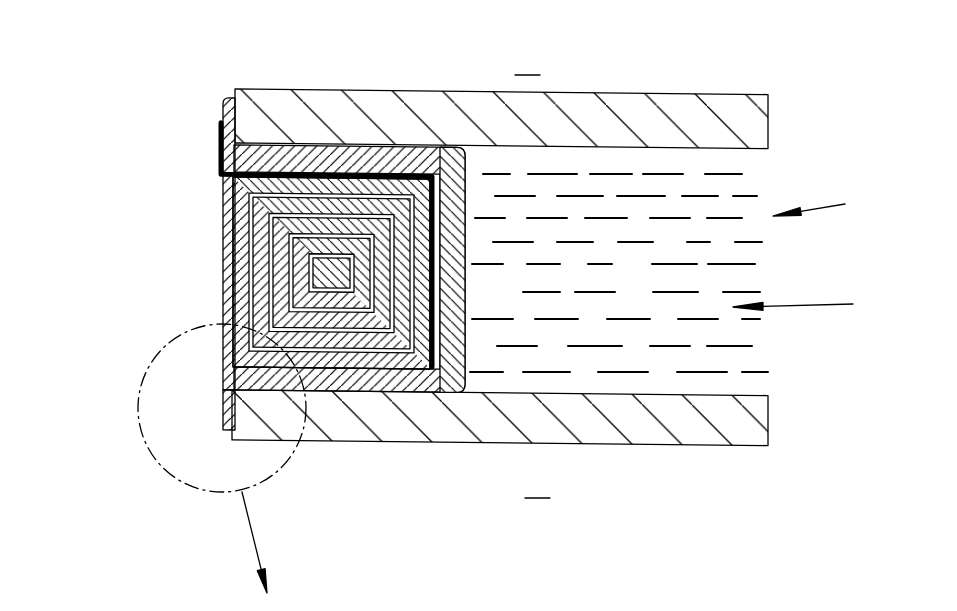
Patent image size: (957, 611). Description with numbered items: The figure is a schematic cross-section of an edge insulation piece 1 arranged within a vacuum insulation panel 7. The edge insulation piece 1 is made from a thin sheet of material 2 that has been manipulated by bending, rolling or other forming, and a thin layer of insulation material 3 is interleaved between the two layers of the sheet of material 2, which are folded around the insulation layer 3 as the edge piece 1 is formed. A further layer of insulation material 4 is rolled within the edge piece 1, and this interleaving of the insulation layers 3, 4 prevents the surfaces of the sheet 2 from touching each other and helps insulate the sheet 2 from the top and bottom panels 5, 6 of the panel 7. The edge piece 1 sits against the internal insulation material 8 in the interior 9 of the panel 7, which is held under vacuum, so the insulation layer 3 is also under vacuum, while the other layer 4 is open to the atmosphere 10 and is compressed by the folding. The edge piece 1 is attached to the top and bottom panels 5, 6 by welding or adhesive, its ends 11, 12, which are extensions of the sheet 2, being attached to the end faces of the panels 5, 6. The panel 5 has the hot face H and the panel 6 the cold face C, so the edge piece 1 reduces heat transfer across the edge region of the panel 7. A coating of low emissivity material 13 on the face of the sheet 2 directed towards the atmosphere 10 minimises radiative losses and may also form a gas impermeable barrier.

The edge insulation piece 1 is at (307, 280).
The thin sheet of material 2 is at (227, 305).
The thin layer of insulation material 3 is at (237, 358).
The further layer of insulation material 4 is at (227, 223).
The top panel 5 is at (700, 113).
The bottom panel 6 is at (735, 430).
The vacuum insulation panel 7 is at (817, 202).
The internal insulation material 8 is at (644, 278).
The interior 9 is at (802, 305).
The atmosphere 10 is at (75, 296).
The end of the edge piece 11 is at (221, 135).
The end of the edge piece 12 is at (222, 417).
The low emissivity material 13 is at (463, 288).